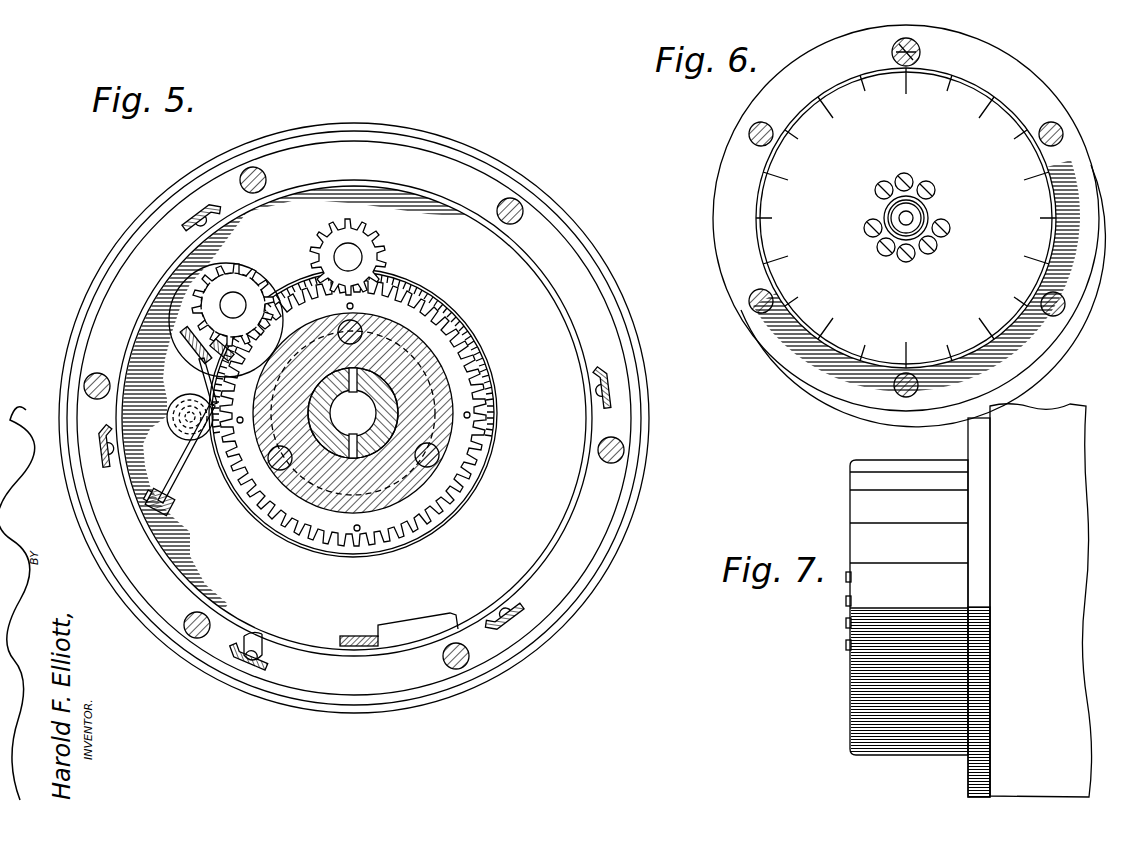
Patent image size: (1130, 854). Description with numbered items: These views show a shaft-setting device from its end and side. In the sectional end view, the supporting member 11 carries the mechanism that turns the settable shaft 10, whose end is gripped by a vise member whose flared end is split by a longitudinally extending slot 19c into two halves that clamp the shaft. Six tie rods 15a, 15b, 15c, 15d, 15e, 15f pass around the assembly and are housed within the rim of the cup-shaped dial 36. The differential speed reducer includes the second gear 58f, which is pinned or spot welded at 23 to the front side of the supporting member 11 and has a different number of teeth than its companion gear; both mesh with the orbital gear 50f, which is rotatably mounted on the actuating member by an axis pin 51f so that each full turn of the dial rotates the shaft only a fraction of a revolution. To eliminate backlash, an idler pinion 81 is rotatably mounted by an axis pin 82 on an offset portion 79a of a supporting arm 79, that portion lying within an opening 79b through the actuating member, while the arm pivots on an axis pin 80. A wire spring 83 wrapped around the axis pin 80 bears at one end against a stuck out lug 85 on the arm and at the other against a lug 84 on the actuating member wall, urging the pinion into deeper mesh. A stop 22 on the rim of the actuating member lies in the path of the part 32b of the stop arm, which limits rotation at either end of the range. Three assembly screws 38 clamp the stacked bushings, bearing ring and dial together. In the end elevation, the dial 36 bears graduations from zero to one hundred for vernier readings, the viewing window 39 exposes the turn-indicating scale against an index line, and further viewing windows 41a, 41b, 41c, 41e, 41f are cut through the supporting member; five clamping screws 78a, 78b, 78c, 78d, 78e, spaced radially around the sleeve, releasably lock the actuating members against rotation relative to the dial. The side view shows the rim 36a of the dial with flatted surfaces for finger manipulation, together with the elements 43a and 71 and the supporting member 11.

In FIG. 5, the settable shaft 10 is at (600, 570).
In FIG. 7, the supporting member 11 is at (968, 434).
In FIG. 5, the tie rod 15a is at (193, 632).
In FIG. 5, the tie rod 15b is at (462, 664).
In FIG. 5, the tie rod 15c is at (623, 453).
In FIG. 5, the tie rod 15d is at (519, 205).
In FIG. 5, the tie rod 15e is at (249, 168).
In FIG. 5, the tie rod 15f is at (83, 384).
In FIG. 5, the longitudinally extending slot 19c is at (379, 453).
In FIG. 5, the stop 22 is at (410, 633).
In FIG. 5, the pin or spot weld 23 is at (357, 532).
In FIG. 5, the part of stop arm 32b is at (350, 635).
In FIG. 6, the cup-shaped dial 36 is at (791, 321).
In FIG. 5, the rim of dial 36a is at (583, 604).
In FIG. 7, the rim of dial 36a is at (925, 460).
In FIG. 5, the assembly screw 38 is at (352, 322).
In FIG. 6, the assembly screw 38 is at (879, 254).
In FIG. 6, the viewing window 39 is at (919, 40).
In FIG. 6, the viewing window 41a is at (896, 392).
In FIG. 6, the viewing window 41b is at (751, 308).
In FIG. 6, the viewing window 41c is at (749, 136).
In FIG. 6, the viewing window 41e is at (1061, 124).
In FIG. 6, the viewing window 41f is at (1061, 313).
In FIG. 5, the clip 43a is at (244, 672).
In FIG. 5, the orbital gear 50f is at (372, 237).
In FIG. 5, the axis pin 51f is at (354, 258).
In FIG. 5, the second gear 58f is at (450, 322).
In FIG. 5, the post 71 is at (266, 650).
In FIG. 6, the clamping screw 78a is at (929, 255).
In FIG. 6, the clamping screw 78b is at (950, 224).
In FIG. 6, the clamping screw 78c is at (936, 189).
In FIG. 6, the clamping screw 78d is at (874, 189).
In FIG. 6, the clamping screw 78e is at (865, 224).
In FIG. 5, the supporting arm 79 is at (182, 352).
In FIG. 5, the offset portion 79a is at (190, 300).
In FIG. 5, the opening 79b is at (198, 338).
In FIG. 5, the axis pin 80 is at (186, 420).
In FIG. 5, the idler pinion 81 is at (240, 288).
In FIG. 5, the axis pin 82 is at (230, 298).
In FIG. 5, the wire spring 83 is at (183, 472).
In FIG. 5, the lug 84 is at (150, 494).
In FIG. 5, the stuck out lug 85 is at (204, 368).